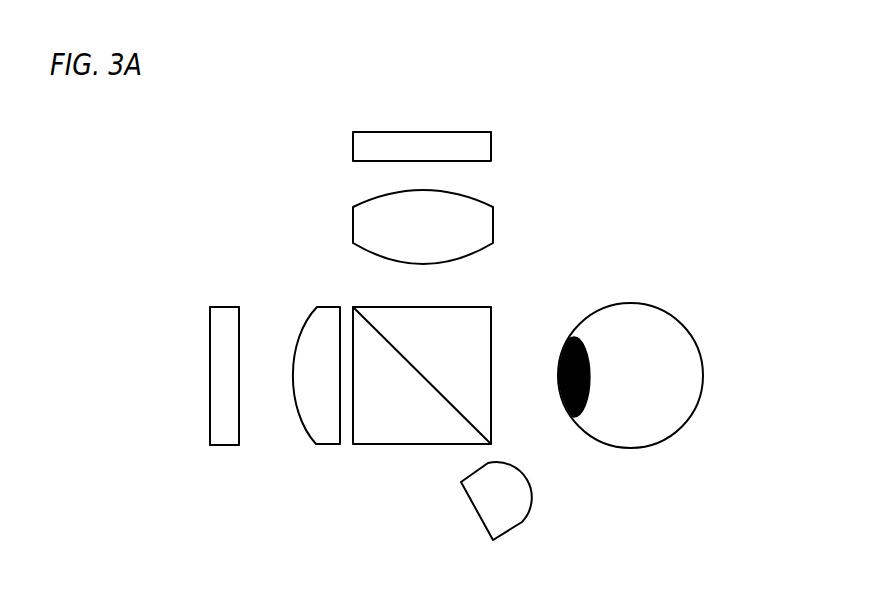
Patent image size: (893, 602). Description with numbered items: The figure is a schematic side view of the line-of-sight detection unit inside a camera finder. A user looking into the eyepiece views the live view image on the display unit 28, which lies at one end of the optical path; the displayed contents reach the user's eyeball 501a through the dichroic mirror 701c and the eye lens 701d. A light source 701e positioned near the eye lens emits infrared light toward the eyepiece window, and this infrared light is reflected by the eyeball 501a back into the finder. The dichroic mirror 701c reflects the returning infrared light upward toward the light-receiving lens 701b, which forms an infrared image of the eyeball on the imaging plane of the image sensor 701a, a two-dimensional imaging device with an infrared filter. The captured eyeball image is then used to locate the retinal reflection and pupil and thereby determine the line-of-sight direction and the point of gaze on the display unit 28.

The display unit 28 is at (223, 307).
The image sensor 701a is at (465, 132).
The light-receiving lens 701b is at (473, 193).
The dichroic mirror 701c is at (475, 307).
The eye lens 701d is at (320, 446).
The light source 701e is at (517, 512).
The eyeball 501a is at (642, 303).